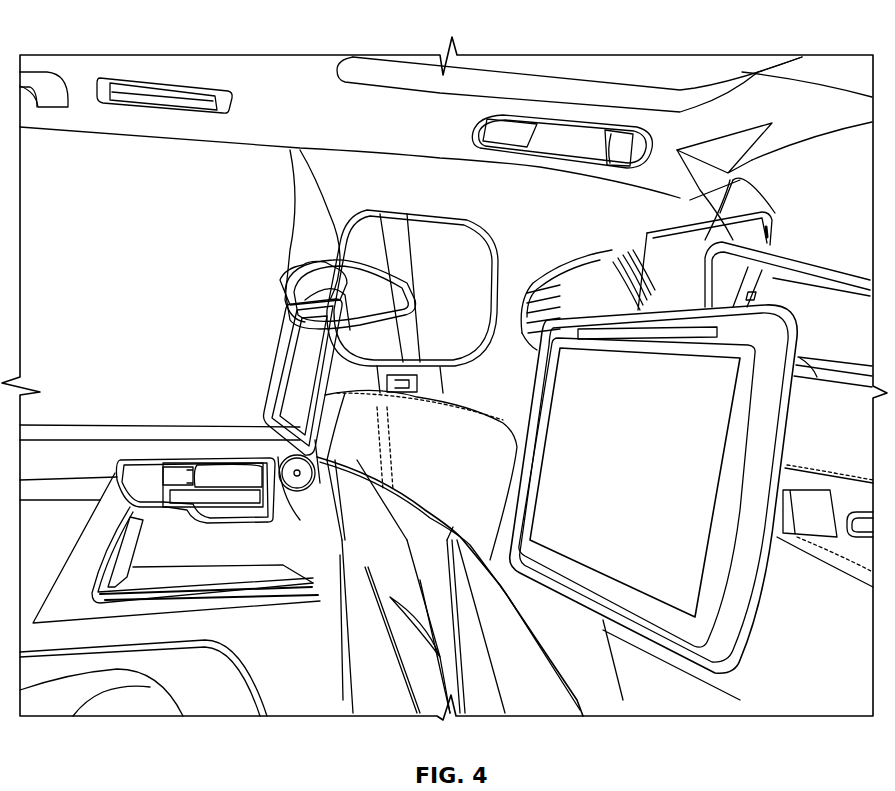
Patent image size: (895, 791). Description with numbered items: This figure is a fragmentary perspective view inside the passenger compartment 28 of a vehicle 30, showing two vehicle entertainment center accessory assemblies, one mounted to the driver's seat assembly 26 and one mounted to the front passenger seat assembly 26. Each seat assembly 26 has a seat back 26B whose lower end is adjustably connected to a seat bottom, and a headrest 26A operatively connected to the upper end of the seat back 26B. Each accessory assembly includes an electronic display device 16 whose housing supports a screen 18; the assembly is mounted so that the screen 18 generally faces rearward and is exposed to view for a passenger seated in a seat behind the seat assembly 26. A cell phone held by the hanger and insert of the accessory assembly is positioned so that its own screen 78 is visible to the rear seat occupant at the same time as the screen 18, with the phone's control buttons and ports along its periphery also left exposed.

The electronic display device 16 is at (767, 568).
The screen 18 is at (288, 356).
The seat assembly 26 is at (455, 243).
The headrest 26A is at (732, 182).
The seat back 26B is at (840, 661).
The passenger compartment 28 is at (175, 281).
The vehicle 30 is at (355, 105).
The screen of the cell phone 78 is at (660, 258).